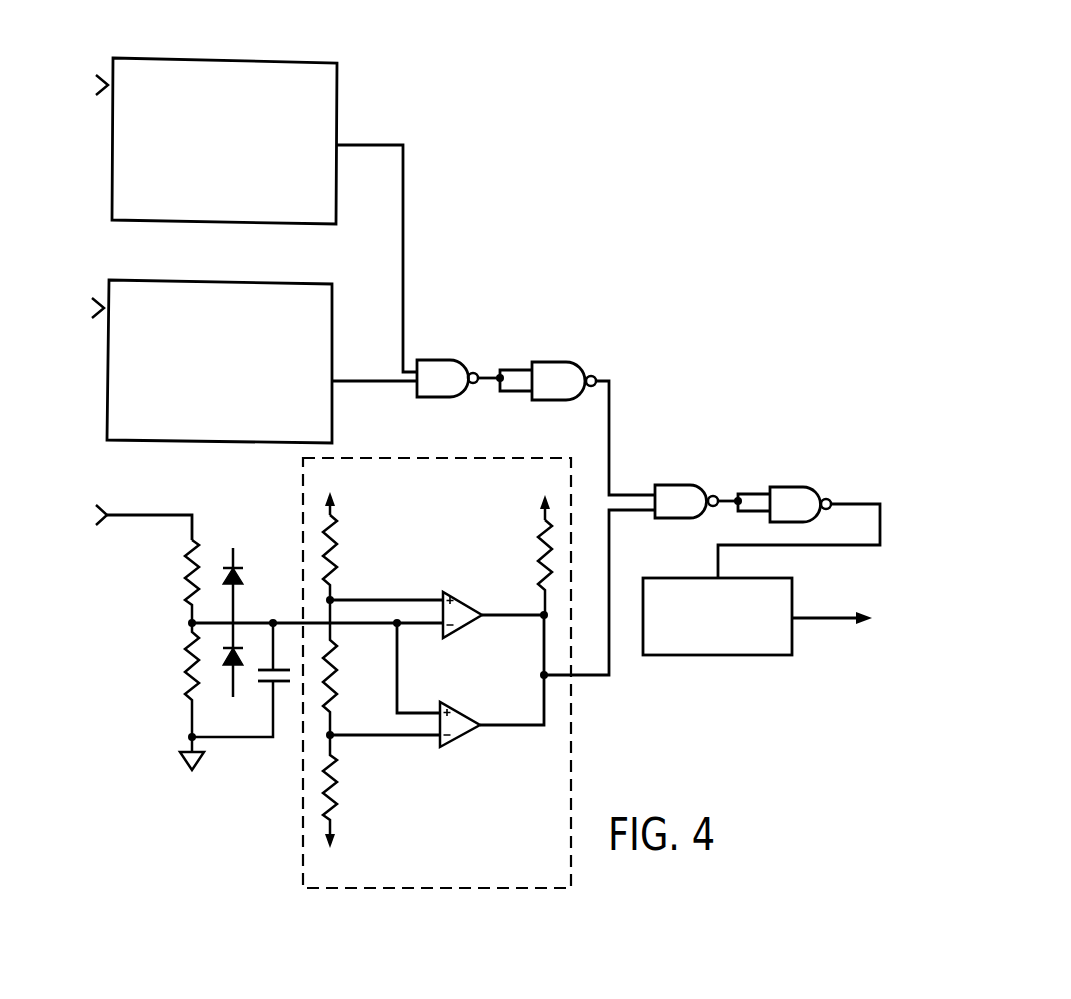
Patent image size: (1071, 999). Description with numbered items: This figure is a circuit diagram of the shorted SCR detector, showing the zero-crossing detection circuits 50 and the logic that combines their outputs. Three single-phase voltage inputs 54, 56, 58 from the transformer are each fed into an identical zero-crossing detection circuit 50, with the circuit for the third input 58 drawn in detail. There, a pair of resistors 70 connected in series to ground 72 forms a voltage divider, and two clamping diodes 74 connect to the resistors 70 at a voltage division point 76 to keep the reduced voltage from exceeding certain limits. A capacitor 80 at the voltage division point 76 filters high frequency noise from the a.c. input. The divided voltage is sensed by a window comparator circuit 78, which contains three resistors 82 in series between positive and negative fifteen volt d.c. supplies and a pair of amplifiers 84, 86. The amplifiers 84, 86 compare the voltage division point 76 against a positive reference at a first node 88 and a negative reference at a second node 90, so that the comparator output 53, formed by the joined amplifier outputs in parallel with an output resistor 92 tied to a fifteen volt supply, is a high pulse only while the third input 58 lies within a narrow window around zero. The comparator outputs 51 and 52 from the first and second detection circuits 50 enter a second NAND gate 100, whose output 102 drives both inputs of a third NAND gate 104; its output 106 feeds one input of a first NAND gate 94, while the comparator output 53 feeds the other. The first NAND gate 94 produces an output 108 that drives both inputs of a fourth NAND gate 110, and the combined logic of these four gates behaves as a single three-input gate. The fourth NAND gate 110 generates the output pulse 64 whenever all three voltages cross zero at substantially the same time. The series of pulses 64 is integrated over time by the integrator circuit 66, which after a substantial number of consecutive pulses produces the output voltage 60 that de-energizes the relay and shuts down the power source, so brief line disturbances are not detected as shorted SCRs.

The zero-crossing detection circuit 50 is at (337, 101).
The comparator output 51 is at (403, 215).
The comparator output 52 is at (360, 380).
The comparator output 53 is at (611, 593).
The single-phase voltage input V1 54 is at (110, 85).
The single-phase voltage input V2 56 is at (107, 308).
The single-phase voltage input V3 58 is at (162, 513).
The output voltage 60 is at (826, 620).
The output pulse 64 is at (855, 504).
The integrator circuit 66 is at (795, 592).
The resistors 70 is at (185, 567).
The ground 72 is at (178, 762).
The clamping diodes 74 is at (243, 574).
The voltage division point 76 is at (192, 623).
The window comparator circuit 78 is at (430, 890).
The capacitor 80 is at (280, 685).
The resistors 82 is at (337, 545).
The amplifier 84 is at (470, 600).
The amplifier 86 is at (468, 712).
The first node 88 is at (336, 600).
The second node 90 is at (333, 733).
The output resistor 92 is at (540, 532).
The first NAND gate 94 is at (678, 485).
The second NAND gate 100 is at (432, 360).
The output 102 is at (487, 374).
The third NAND gate 104 is at (550, 362).
The output 106 is at (612, 408).
The output 108 is at (728, 496).
The fourth NAND gate 110 is at (792, 487).